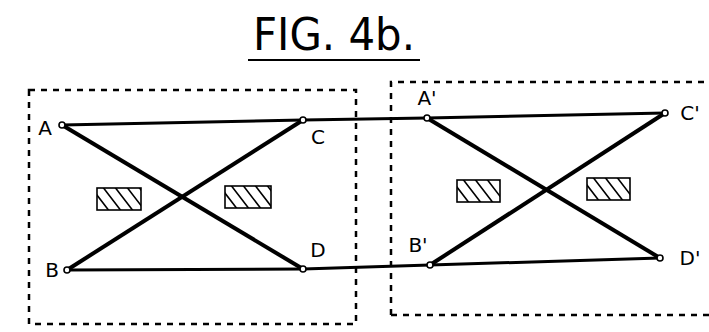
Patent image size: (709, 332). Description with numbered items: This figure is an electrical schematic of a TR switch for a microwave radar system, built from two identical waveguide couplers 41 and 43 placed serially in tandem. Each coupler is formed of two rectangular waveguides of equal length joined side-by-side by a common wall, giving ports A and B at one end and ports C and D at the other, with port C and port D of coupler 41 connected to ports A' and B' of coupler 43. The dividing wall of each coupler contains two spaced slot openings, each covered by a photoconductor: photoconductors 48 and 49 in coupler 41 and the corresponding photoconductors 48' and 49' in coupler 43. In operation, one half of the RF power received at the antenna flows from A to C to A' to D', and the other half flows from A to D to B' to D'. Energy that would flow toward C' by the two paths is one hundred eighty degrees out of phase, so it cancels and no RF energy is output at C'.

The waveguide coupler 41 is at (193, 89).
The waveguide coupler 43 is at (545, 81).
The photoconductor 48 is at (106, 190).
The photoconductor 49 is at (261, 181).
The photoconductor 48' is at (466, 182).
The photoconductor 49' is at (626, 173).